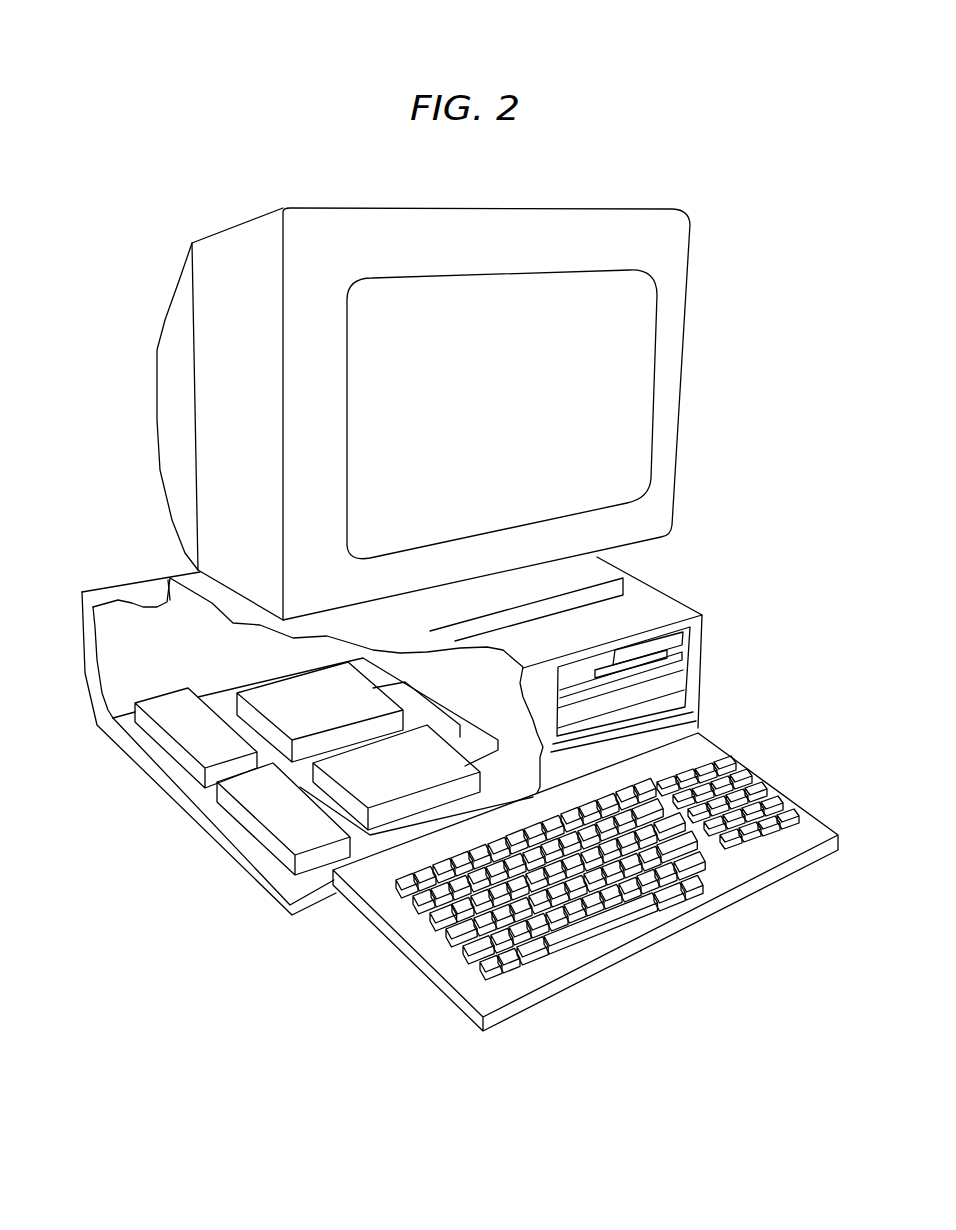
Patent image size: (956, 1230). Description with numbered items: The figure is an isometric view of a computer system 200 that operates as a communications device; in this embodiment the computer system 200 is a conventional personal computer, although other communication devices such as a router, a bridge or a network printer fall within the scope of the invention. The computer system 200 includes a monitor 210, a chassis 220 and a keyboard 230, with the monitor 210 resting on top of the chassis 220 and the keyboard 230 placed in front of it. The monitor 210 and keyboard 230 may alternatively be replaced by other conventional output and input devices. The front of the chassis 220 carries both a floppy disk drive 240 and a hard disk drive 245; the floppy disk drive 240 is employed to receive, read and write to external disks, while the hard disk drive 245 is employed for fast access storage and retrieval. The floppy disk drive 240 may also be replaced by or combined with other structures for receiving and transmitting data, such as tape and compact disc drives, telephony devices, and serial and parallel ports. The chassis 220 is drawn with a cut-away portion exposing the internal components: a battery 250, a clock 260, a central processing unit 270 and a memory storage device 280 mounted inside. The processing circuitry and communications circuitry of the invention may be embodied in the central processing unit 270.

The computer system 200 is at (810, 211).
The monitor 210 is at (683, 355).
The chassis 220 is at (420, 732).
The keyboard 230 is at (775, 788).
The floppy disk drive 240 is at (680, 657).
The hard disk drive 245 is at (677, 682).
The battery 250 is at (252, 834).
The clock 260 is at (157, 748).
The central processing unit 270 is at (383, 828).
The memory storage device 280 is at (260, 688).